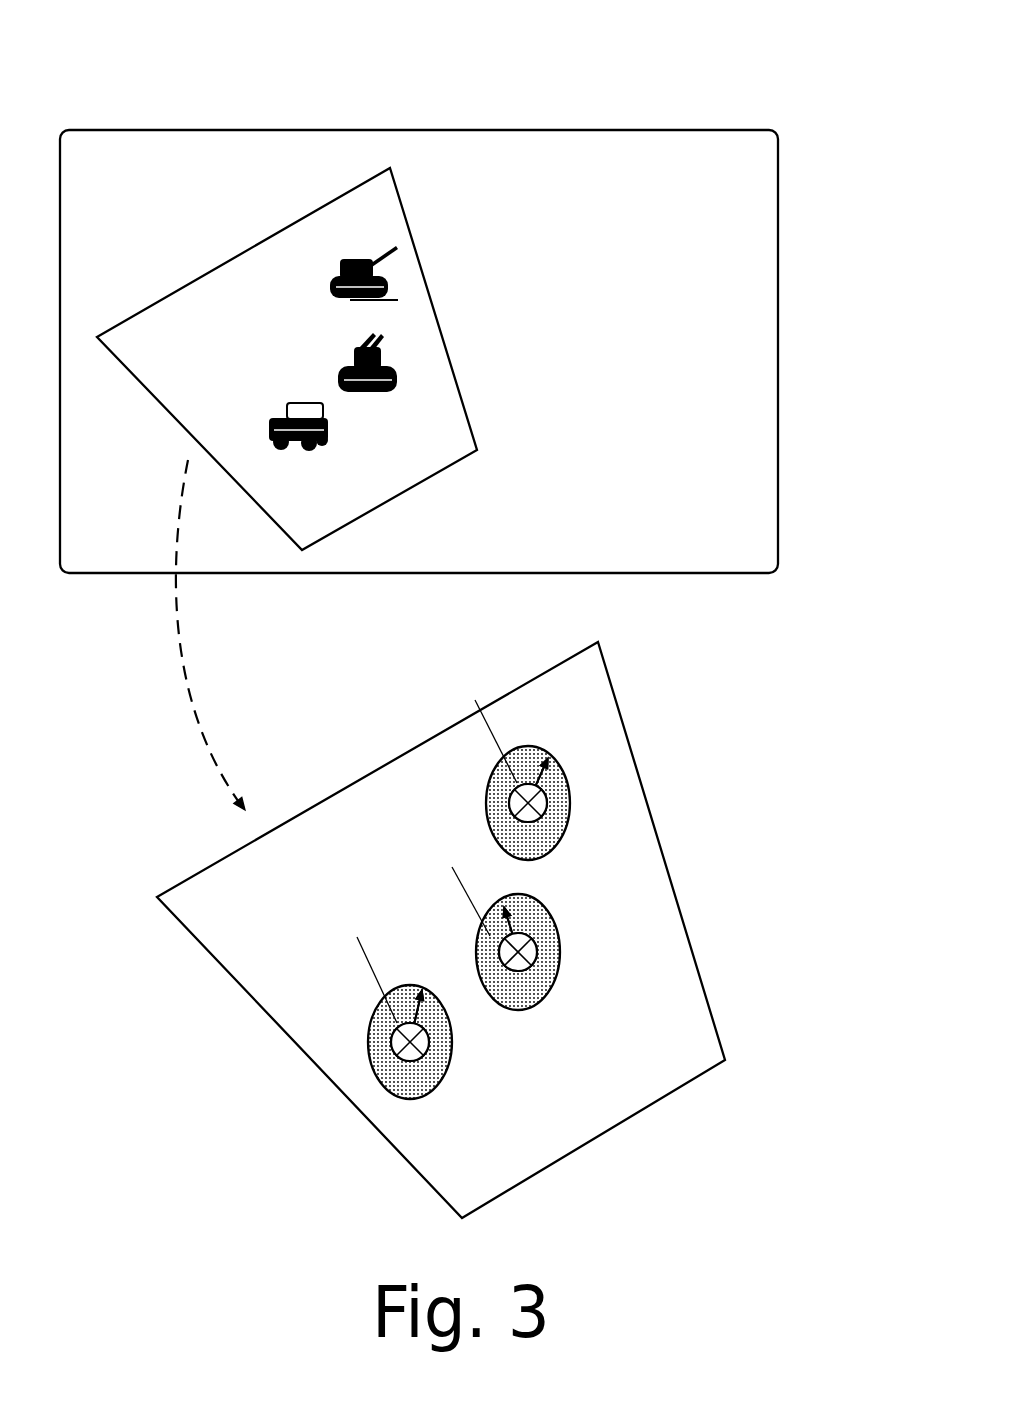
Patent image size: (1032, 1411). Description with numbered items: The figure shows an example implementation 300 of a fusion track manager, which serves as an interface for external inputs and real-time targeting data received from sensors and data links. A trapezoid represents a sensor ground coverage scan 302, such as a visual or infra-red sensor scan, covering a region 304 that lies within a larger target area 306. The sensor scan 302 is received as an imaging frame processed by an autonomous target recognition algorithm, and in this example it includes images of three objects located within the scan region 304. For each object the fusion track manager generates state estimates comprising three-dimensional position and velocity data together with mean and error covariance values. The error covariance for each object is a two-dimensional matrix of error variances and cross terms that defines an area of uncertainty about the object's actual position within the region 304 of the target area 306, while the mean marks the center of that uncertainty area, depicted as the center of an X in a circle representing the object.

The example implementation 300 is at (762, 98).
The sensor ground coverage scan 302 is at (445, 468).
The region 304 is at (435, 413).
The target area 306 is at (652, 189).